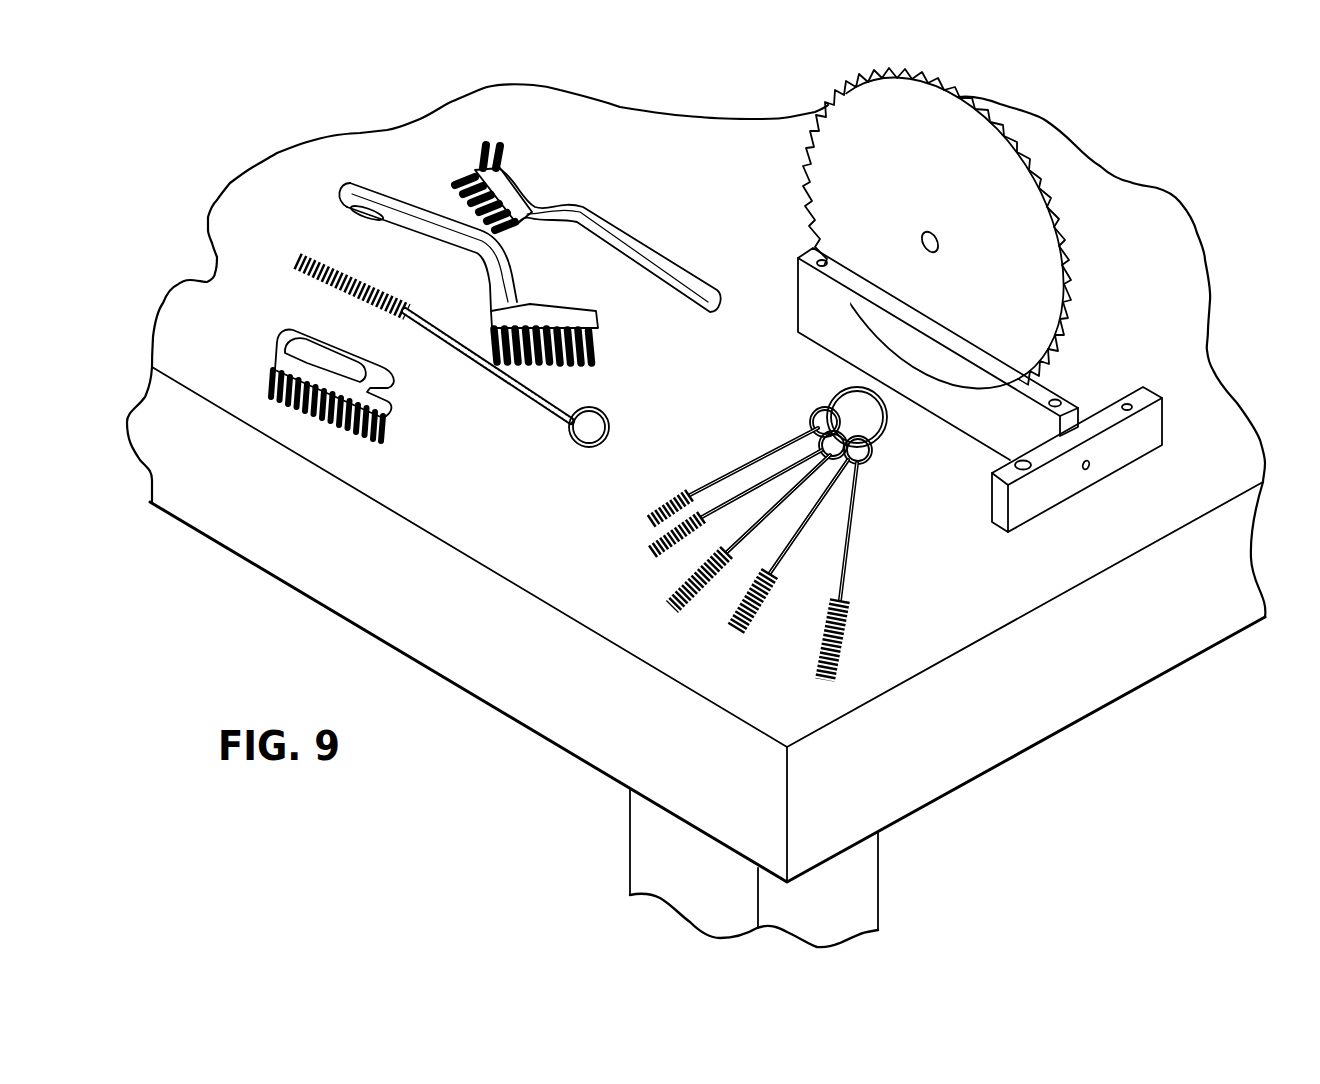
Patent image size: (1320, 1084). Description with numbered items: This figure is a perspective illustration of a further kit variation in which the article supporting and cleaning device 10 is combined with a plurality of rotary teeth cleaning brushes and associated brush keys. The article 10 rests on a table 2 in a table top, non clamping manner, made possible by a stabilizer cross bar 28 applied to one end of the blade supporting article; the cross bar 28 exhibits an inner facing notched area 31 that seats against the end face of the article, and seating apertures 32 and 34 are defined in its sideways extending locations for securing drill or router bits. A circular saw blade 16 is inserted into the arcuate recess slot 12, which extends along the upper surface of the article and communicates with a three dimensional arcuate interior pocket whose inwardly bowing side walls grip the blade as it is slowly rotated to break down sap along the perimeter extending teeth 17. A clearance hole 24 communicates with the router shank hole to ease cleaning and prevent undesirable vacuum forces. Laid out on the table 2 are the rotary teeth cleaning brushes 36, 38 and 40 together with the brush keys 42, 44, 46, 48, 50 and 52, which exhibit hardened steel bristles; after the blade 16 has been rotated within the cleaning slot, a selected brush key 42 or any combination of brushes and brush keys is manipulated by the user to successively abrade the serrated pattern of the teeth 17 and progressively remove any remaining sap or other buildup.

The table 2 is at (557, 532).
The article supporting and cleaning device 10 is at (972, 282).
The arcuate recess slot 12 is at (905, 318).
The circular saw blade 16 is at (990, 222).
The teeth 17 is at (925, 95).
The clearance hole 24 is at (1055, 398).
The stabilizer cross bar 28 is at (1128, 446).
The notched area 31 is at (1057, 440).
The seating aperture 32 is at (1127, 403).
The seating aperture 34 is at (1022, 462).
The rotary teeth cleaning brush 36 is at (560, 207).
The rotary teeth cleaning brush 38 is at (440, 240).
The rotary teeth cleaning brush 40 is at (365, 385).
The brush key 42 is at (335, 290).
The brush key 44 is at (838, 665).
The brush key 46 is at (760, 608).
The brush key 48 is at (688, 597).
The brush key 50 is at (646, 552).
The brush key 52 is at (653, 503).